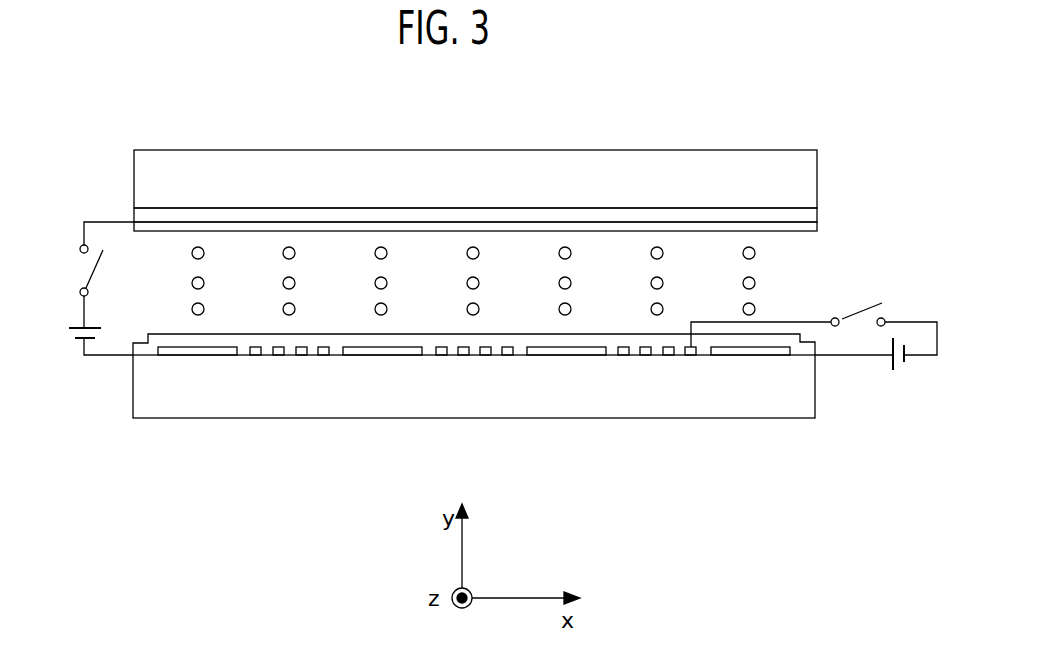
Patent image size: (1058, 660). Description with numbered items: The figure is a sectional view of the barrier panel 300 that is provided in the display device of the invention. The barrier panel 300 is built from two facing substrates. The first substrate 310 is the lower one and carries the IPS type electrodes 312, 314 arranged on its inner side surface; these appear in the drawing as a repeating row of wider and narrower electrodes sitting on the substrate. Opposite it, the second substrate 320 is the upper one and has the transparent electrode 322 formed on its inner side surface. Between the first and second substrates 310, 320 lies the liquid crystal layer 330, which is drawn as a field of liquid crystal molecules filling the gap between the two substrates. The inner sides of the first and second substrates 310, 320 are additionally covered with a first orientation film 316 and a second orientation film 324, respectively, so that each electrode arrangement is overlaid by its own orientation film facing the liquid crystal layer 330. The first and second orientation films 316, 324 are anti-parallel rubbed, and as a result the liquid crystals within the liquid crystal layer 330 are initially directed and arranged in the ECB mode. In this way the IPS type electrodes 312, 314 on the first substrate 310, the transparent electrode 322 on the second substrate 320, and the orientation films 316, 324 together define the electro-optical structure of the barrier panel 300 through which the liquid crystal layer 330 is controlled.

The barrier panel 300 is at (744, 129).
The first substrate 310 is at (805, 402).
The IPS type electrode 312 is at (195, 351).
The IPS type electrode 314 is at (256, 351).
The first orientation film 316 is at (135, 343).
The second substrate 320 is at (817, 168).
The transparent electrode 322 is at (817, 212).
The second orientation film 324 is at (817, 229).
The liquid crystal layer 330 is at (757, 311).